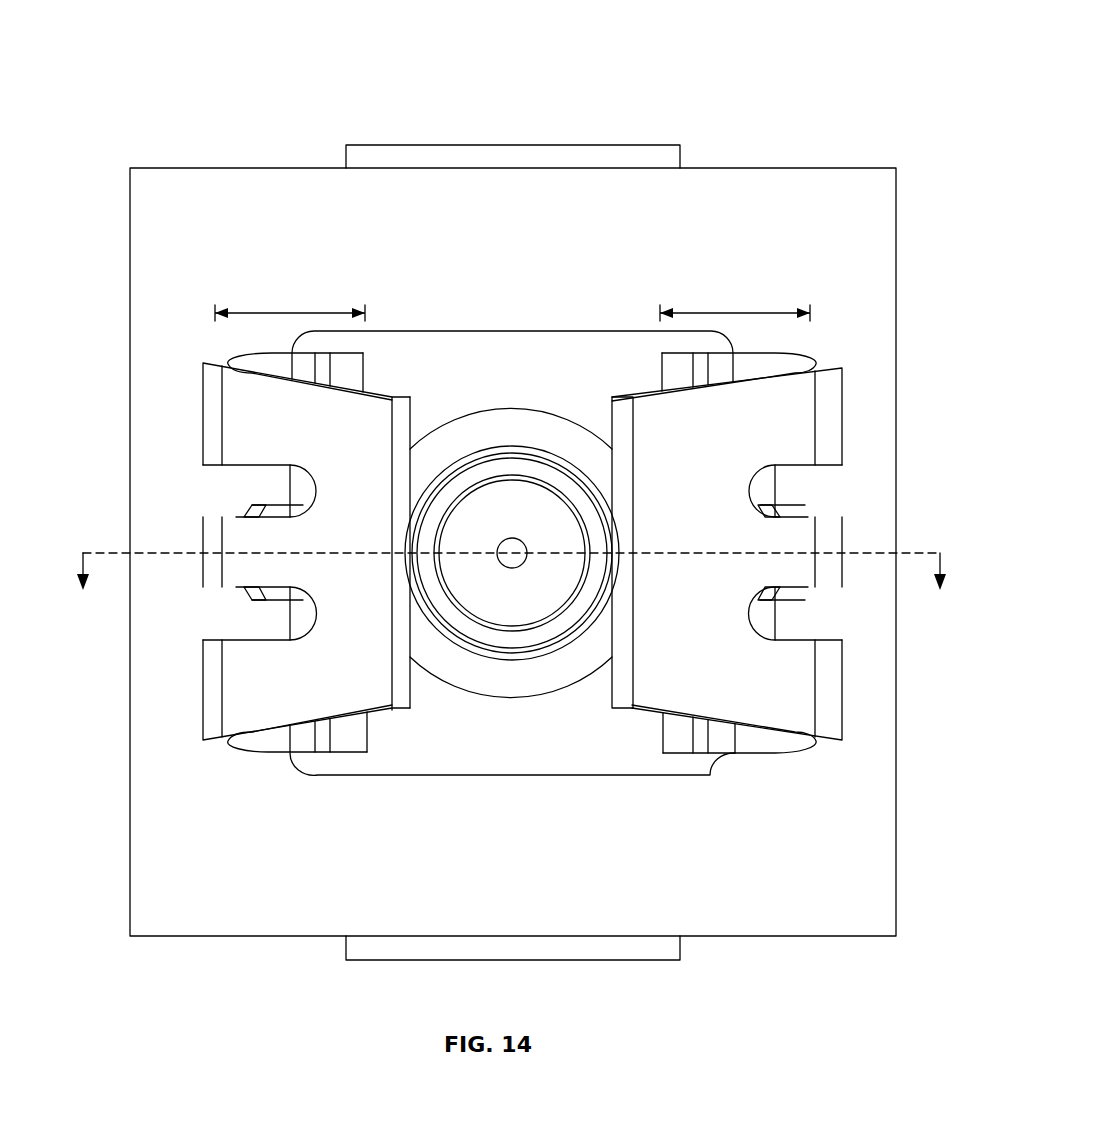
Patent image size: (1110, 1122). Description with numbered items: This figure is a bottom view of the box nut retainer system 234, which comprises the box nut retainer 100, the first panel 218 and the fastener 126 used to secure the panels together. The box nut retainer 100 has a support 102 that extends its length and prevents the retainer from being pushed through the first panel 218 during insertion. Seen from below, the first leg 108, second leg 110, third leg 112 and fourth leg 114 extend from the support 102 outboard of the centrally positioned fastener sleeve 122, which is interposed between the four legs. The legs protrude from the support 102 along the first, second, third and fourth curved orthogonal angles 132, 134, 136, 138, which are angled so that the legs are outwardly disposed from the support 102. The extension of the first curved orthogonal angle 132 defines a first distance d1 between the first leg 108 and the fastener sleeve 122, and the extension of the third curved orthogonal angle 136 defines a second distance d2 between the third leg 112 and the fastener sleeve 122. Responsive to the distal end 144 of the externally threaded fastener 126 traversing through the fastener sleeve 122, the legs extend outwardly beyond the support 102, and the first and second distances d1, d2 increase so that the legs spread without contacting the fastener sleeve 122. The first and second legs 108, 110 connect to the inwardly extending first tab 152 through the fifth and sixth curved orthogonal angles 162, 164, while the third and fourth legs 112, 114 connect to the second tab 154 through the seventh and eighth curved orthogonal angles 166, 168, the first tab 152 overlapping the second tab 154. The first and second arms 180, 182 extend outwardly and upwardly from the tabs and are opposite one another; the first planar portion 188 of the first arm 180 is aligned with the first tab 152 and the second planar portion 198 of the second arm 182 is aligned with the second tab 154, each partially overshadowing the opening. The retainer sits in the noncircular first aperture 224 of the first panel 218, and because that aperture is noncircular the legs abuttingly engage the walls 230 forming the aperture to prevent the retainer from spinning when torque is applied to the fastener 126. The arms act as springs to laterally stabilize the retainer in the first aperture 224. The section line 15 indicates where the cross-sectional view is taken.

The box nut retainer 100 is at (252, 138).
The support 102 is at (400, 155).
The first leg 108 is at (270, 352).
The second leg 110 is at (265, 745).
The third leg 112 is at (735, 355).
The fourth leg 114 is at (760, 740).
The fastener sleeve 122 is at (445, 440).
The fastener 126 is at (500, 510).
The first curved orthogonal angle 132 is at (350, 360).
The second curved orthogonal angle 134 is at (345, 745).
The third curved orthogonal angle 136 is at (680, 355).
The fourth curved orthogonal angle 138 is at (680, 745).
The distal end 144 is at (540, 520).
The first tab 152 is at (355, 668).
The second tab 154 is at (655, 640).
The fifth curved orthogonal angle 162 is at (205, 415).
The sixth curved orthogonal angle 164 is at (205, 700).
The seventh curved orthogonal angle 166 is at (830, 410).
The eighth curved orthogonal angle 168 is at (830, 690).
The first arm 180 is at (230, 540).
The second arm 182 is at (815, 540).
The first planar portion 188 is at (250, 572).
The second planar portion 198 is at (810, 572).
The first panel 218 is at (173, 212).
The first aperture 224 is at (329, 762).
The walls 230 is at (520, 335).
The box nut retainer system 234 is at (842, 50).
The section line 15 is at (513, 584).
The first distance d1 is at (300, 318).
The second distance d2 is at (740, 318).